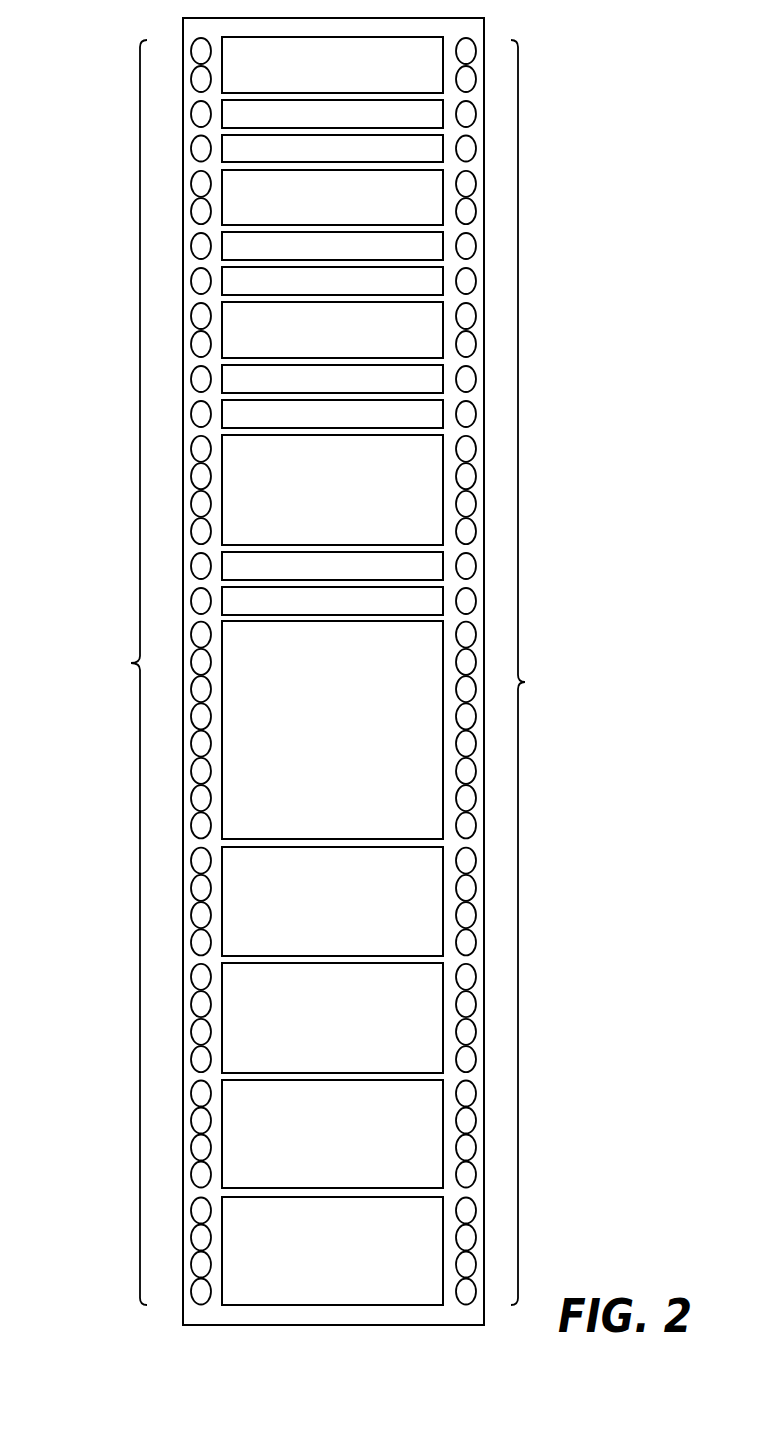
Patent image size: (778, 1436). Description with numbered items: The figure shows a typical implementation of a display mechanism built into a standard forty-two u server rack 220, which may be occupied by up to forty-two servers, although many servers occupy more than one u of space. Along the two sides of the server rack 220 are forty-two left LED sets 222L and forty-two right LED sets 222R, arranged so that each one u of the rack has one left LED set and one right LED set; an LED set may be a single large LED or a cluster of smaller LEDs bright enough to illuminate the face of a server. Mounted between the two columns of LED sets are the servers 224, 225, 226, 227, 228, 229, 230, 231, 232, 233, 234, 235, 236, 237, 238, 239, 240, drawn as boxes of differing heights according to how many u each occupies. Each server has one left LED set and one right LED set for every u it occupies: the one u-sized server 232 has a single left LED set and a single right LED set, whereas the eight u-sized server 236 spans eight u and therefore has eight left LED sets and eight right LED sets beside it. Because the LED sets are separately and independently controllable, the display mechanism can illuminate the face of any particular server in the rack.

The server rack 220 is at (166, 24).
The left LED sets 222L is at (139, 671).
The right LED sets 222R is at (525, 671).
The server 224 is at (428, 86).
The server 225 is at (428, 126).
The server 226 is at (428, 160).
The server 227 is at (428, 218).
The server 228 is at (428, 258).
The server 229 is at (428, 293).
The server 230 is at (428, 351).
The server 231 is at (428, 391).
The server 232 is at (428, 426).
The server 233 is at (428, 534).
The server 234 is at (428, 578).
The server 235 is at (428, 613).
The server 236 is at (428, 806).
The server 237 is at (428, 945).
The server 238 is at (428, 1063).
The server 239 is at (428, 1162).
The server 240 is at (428, 1289).